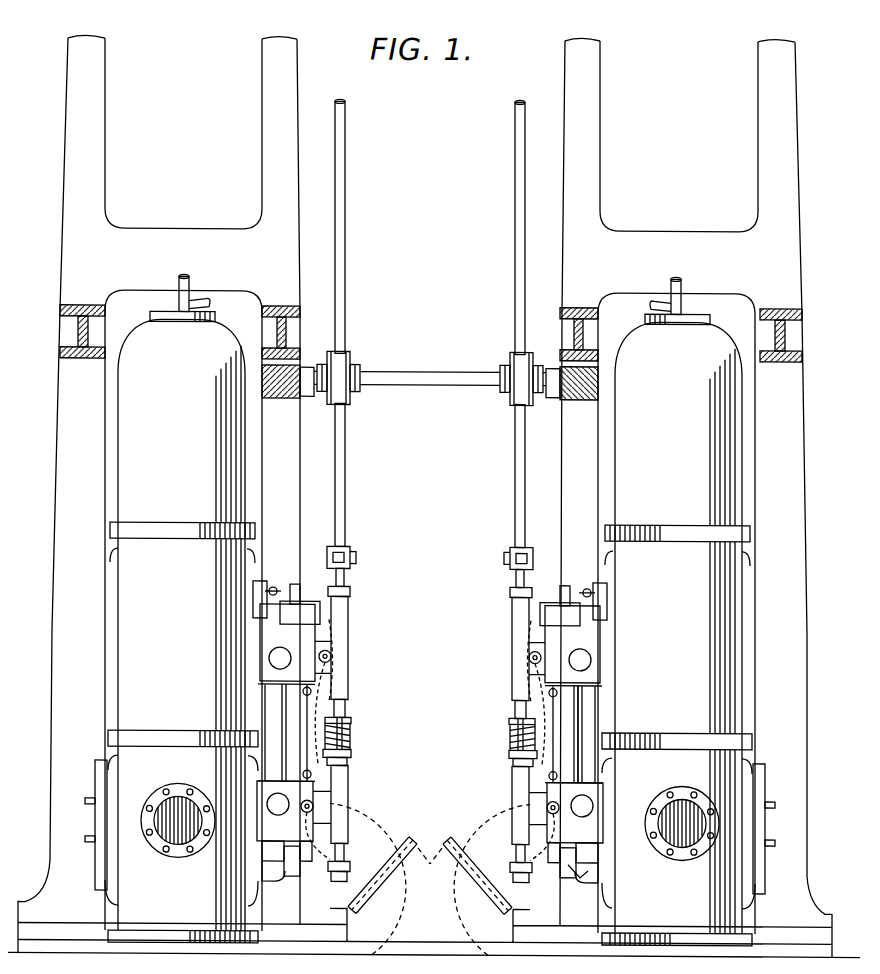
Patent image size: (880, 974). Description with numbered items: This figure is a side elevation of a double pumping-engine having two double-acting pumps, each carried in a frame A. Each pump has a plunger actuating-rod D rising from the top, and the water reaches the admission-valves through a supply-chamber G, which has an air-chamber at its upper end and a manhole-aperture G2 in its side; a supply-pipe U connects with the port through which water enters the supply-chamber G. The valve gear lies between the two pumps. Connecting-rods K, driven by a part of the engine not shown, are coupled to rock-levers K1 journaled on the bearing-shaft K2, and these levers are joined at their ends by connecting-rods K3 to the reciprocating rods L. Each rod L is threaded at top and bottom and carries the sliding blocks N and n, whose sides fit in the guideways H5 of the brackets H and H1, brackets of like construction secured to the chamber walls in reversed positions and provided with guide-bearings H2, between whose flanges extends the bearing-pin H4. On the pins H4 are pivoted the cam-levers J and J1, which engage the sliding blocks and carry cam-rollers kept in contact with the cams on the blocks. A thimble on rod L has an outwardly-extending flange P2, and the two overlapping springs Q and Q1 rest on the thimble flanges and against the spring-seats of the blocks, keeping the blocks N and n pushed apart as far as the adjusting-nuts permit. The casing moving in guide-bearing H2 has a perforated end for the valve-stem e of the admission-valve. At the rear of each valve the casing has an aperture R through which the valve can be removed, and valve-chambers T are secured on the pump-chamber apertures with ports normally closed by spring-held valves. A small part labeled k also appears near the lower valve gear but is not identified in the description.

The frame A is at (55, 512).
The actuating-rod D is at (200, 304).
The supply-chamber G is at (430, 628).
The manhole-aperture G2 is at (178, 857).
The connecting-rod K is at (345, 222).
The rock-lever K1 is at (355, 362).
The bearing-shaft K2 is at (440, 388).
The connecting-rod K3 is at (345, 497).
The reciprocating rod L is at (344, 577).
The cam-lever J is at (350, 606).
The block N is at (348, 619).
The bracket H is at (430, 684).
The bracket H1 is at (430, 821).
The guide-bearing H2 is at (290, 600).
The bearing-pin H4 is at (430, 734).
The guideway H5 is at (348, 656).
The valve-stem e is at (430, 596).
The spring Q is at (351, 728).
The spring Q1 is at (351, 756).
The outwardly-extending flange P2 is at (345, 746).
The valve-chamber T is at (430, 733).
The aperture R is at (583, 734).
The block n is at (345, 855).
The cam-lever J1 is at (350, 864).
The lever arm k is at (577, 878).
The supply-pipe U is at (430, 879).